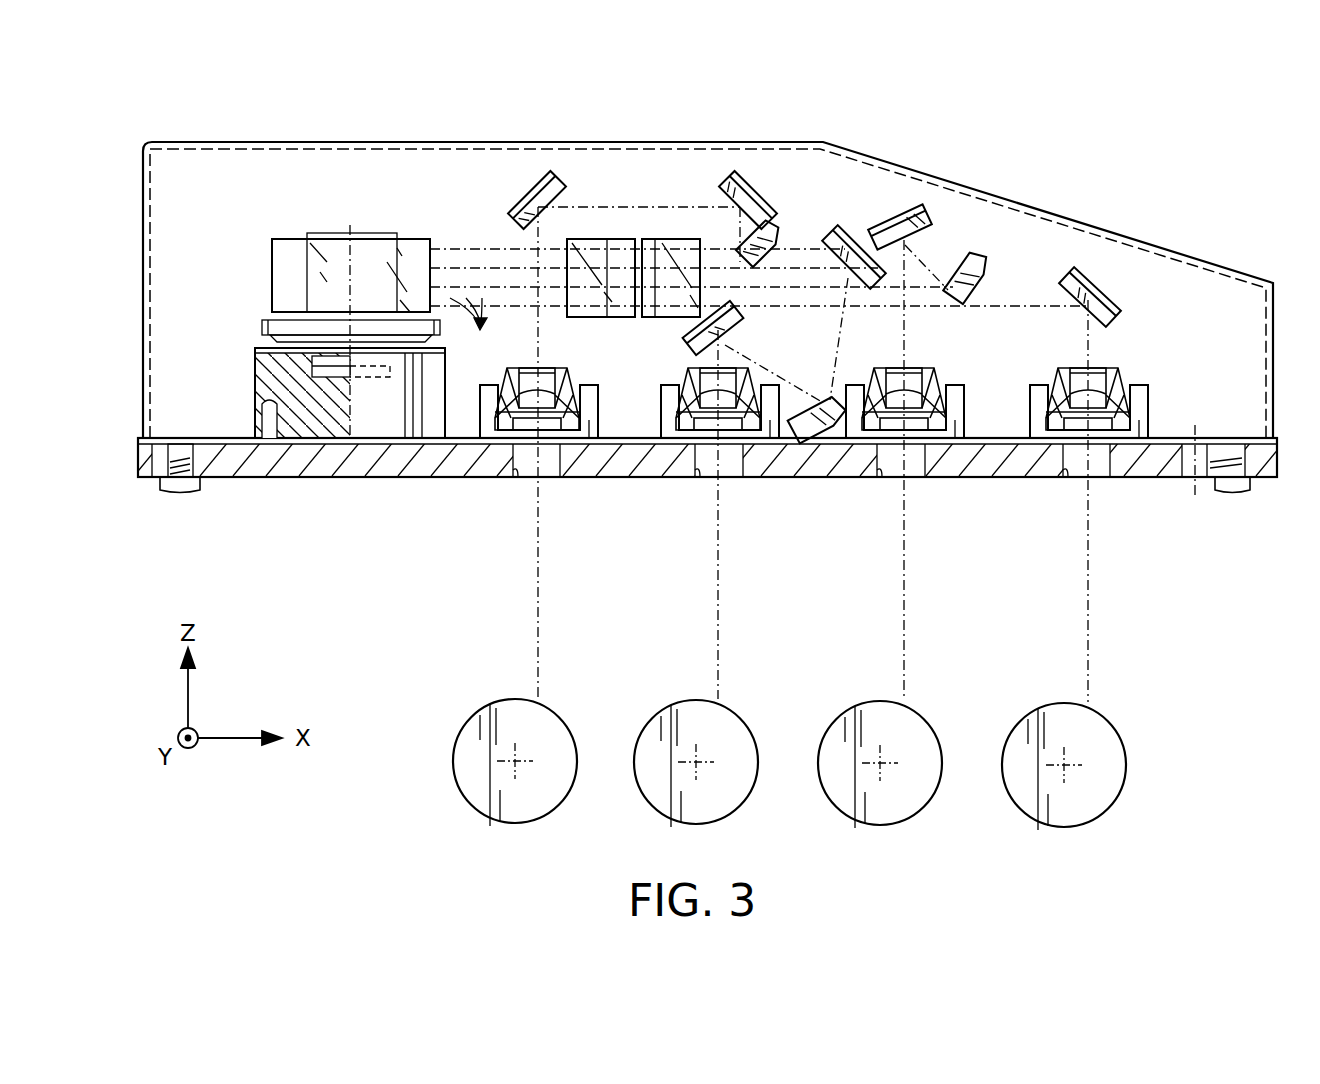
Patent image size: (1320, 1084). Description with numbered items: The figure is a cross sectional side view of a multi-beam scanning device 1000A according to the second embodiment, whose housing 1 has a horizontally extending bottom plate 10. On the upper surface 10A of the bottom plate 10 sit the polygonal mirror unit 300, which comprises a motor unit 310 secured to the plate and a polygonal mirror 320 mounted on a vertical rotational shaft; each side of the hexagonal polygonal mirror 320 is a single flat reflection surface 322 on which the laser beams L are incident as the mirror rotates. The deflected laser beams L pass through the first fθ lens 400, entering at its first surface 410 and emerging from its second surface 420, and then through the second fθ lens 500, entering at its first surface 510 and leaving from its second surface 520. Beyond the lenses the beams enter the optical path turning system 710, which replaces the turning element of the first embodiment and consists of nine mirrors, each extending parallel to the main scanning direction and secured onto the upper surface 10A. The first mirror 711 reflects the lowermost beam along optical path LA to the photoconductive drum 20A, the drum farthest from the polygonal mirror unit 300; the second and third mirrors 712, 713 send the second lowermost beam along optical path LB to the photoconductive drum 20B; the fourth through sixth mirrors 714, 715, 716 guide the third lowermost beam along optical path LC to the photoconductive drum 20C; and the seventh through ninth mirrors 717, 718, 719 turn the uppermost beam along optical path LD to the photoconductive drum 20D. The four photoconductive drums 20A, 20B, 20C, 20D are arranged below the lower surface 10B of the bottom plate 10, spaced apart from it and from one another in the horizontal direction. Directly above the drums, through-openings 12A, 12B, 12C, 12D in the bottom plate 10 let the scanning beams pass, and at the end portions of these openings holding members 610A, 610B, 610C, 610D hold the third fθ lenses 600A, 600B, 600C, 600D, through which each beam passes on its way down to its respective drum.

The multi-beam scanning device 1000A is at (1025, 160).
The housing 1 is at (1085, 222).
The bottom plate 10 is at (1152, 485).
The upper surface 10A is at (215, 438).
The lower surface 10B is at (230, 480).
The opening 12A is at (1068, 470).
The opening 12B is at (880, 470).
The opening 12C is at (700, 470).
The opening 12D is at (518, 470).
The photoconductive drum 20A is at (1035, 706).
The photoconductive drum 20B is at (851, 705).
The photoconductive drum 20C is at (667, 705).
The photoconductive drum 20D is at (485, 705).
The polygonal mirror unit 300 is at (316, 222).
The motor unit 310 is at (272, 375).
The polygonal mirror 320 is at (410, 238).
The reflection surface 322 is at (282, 278).
The first fθ lens 400 is at (594, 232).
The first surface 410 is at (567, 240).
The second surface 420 is at (625, 317).
The second fθ lens 500 is at (683, 238).
The first surface 510 is at (642, 240).
The second surface 520 is at (676, 317).
The third fθ lens 600A is at (1104, 372).
The third fθ lens 600B is at (922, 372).
The third fθ lens 600C is at (786, 367).
The third fθ lens 600D is at (556, 372).
The holding member 610A is at (1138, 405).
The holding member 610B is at (968, 462).
The holding member 610C is at (788, 462).
The holding member 610D is at (598, 462).
The optical path turning system 710 is at (1170, 298).
The first mirror 711 is at (1120, 282).
The second mirror 712 is at (978, 268).
The third mirror 713 is at (895, 220).
The fourth mirror 714 is at (848, 245).
The fifth mirror 715 is at (835, 402).
The sixth mirror 716 is at (745, 326).
The seventh mirror 717 is at (780, 235).
The eighth mirror 718 is at (758, 200).
The ninth mirror 719 is at (525, 197).
The laser beams L is at (475, 324).
The optical path LA is at (1038, 305).
The optical path LB is at (942, 285).
The optical path LC is at (790, 272).
The optical path LD is at (728, 256).